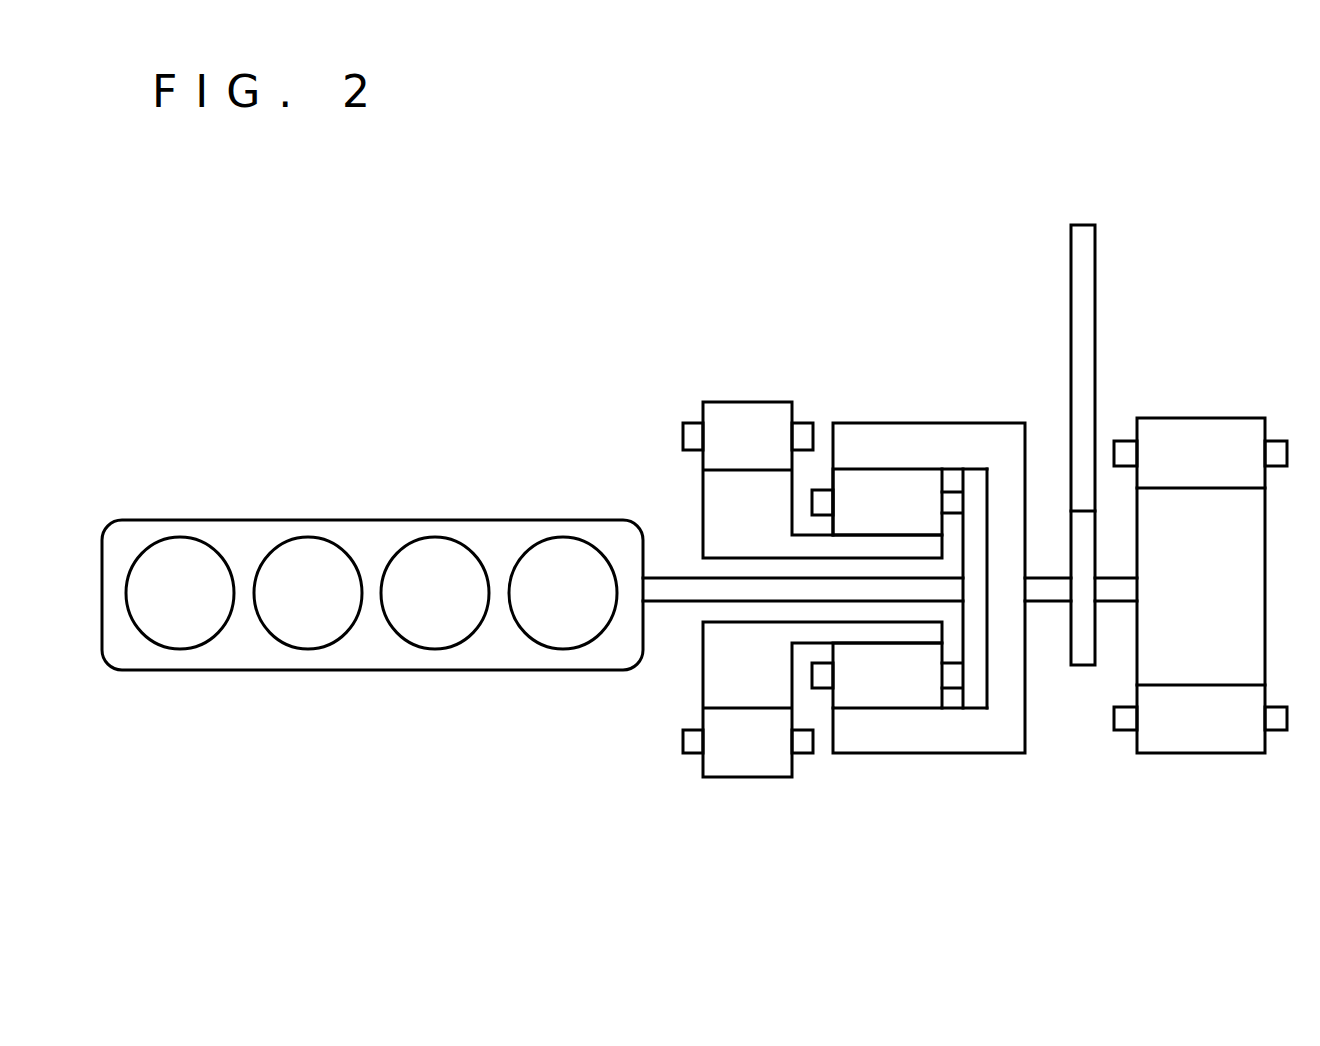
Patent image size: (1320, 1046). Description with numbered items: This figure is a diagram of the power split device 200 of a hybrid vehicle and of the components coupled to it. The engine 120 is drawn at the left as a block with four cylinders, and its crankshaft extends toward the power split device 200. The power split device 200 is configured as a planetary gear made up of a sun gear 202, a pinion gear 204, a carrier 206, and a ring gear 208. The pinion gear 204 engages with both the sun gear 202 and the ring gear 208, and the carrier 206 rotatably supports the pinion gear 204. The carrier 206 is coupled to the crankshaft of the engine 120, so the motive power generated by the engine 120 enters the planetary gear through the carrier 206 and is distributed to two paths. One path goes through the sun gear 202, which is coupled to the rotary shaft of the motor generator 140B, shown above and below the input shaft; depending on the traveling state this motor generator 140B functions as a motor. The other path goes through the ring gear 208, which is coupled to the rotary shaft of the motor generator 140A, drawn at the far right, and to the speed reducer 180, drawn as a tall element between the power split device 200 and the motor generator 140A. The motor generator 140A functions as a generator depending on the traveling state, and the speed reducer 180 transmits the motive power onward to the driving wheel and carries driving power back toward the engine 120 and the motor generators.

The engine 120 is at (373, 520).
The motor generator (MG (2)) 140A is at (1200, 418).
The motor generator (MG (1)) 140B is at (749, 402).
The speed reducer 180 is at (1105, 200).
The power split device 200 is at (916, 584).
The sun gear 202 is at (870, 645).
The pinion gear 204 is at (907, 708).
The carrier 206 is at (953, 625).
The ring gear 208 is at (985, 755).